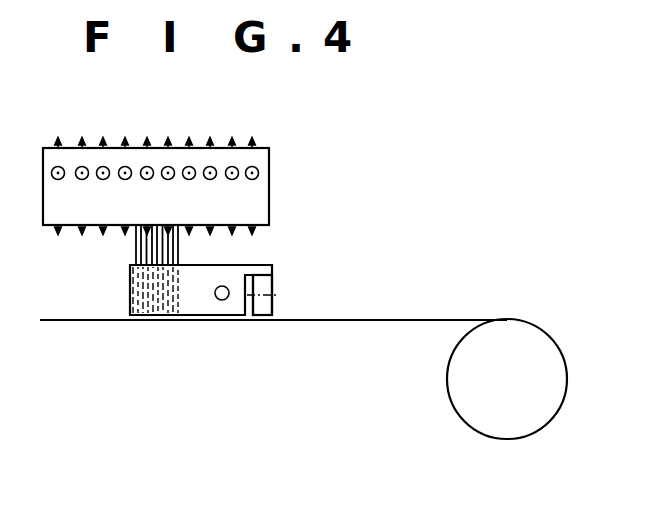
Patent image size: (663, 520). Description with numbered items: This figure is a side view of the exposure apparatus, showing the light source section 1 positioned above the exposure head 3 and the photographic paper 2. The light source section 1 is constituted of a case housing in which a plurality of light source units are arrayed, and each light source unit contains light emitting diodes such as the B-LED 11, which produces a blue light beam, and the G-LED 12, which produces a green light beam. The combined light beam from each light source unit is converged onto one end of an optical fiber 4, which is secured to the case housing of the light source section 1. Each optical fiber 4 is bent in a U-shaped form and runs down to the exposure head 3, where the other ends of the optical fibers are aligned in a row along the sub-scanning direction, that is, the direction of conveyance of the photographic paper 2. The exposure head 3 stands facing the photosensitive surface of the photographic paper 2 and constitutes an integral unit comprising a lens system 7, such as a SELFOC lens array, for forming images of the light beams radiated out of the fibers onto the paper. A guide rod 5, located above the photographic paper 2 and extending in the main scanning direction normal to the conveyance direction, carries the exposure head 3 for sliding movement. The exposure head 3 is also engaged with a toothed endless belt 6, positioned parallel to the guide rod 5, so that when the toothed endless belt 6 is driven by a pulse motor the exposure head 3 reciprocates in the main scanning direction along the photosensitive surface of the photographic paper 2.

The light source section 1 is at (180, 155).
The photographic paper 2 is at (388, 320).
The exposure head 3 is at (188, 305).
The optical fiber 4 is at (135, 248).
The guide rod 5 is at (222, 300).
The toothed endless belt 6 is at (265, 285).
The lens system 7 is at (130, 325).
The B-LED 11 is at (189, 180).
The G-LED 12 is at (168, 145).